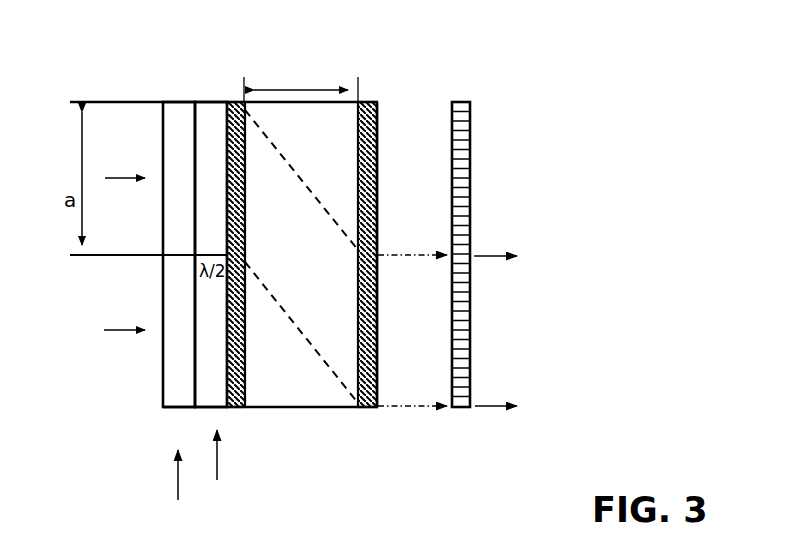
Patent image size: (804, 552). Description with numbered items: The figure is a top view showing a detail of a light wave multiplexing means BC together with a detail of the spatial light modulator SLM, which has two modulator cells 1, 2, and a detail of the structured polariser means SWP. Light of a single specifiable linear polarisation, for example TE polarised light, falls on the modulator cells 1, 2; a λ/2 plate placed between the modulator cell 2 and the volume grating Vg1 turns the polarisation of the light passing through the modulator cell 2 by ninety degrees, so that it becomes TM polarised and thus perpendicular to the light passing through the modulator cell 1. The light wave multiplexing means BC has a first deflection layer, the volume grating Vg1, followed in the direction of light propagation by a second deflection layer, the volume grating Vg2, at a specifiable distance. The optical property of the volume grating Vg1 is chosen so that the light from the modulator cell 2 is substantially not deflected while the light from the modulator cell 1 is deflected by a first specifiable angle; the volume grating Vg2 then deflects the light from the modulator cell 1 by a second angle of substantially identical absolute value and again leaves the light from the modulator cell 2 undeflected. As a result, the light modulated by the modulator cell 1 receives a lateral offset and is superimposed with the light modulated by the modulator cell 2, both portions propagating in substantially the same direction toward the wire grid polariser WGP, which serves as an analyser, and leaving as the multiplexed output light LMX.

The modulator cell 1 is at (178, 128).
The modulator cell 2 is at (173, 370).
The light wave multiplexing means BC is at (333, 241).
The volume grating Vg1 is at (236, 407).
The volume grating Vg2 is at (370, 407).
The polarisation means WGP is at (455, 240).
The light multiplexed output LMX is at (493, 253).
The spatial light modulator SLM is at (174, 489).
The structured polariser means SWP is at (214, 467).
The TE polarisation TE is at (125, 166).
The TM polarized light TM is at (124, 318).